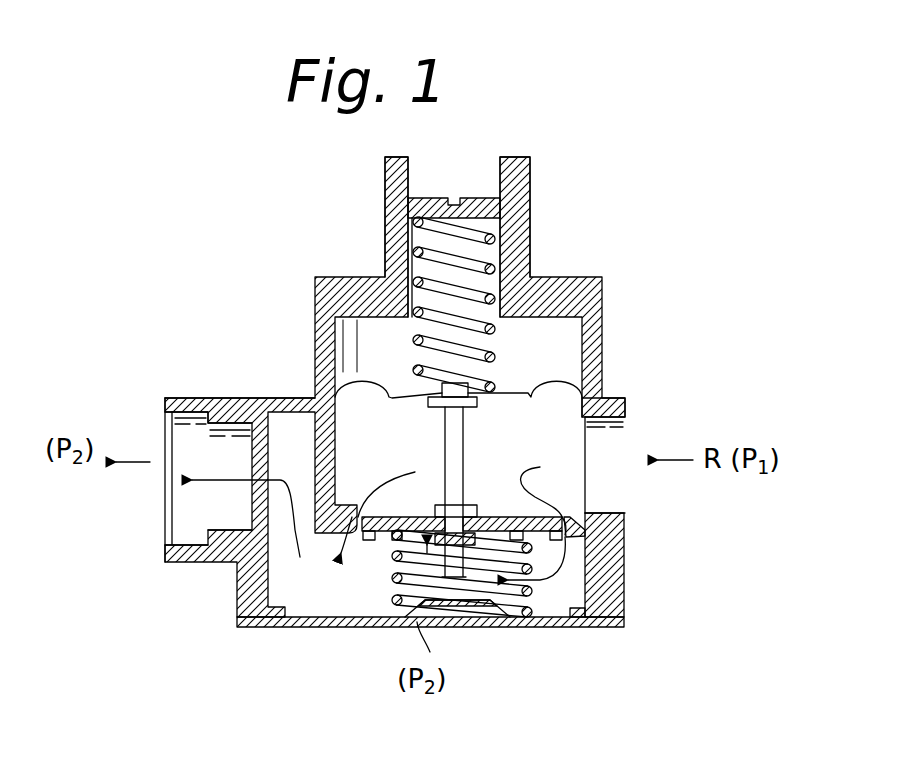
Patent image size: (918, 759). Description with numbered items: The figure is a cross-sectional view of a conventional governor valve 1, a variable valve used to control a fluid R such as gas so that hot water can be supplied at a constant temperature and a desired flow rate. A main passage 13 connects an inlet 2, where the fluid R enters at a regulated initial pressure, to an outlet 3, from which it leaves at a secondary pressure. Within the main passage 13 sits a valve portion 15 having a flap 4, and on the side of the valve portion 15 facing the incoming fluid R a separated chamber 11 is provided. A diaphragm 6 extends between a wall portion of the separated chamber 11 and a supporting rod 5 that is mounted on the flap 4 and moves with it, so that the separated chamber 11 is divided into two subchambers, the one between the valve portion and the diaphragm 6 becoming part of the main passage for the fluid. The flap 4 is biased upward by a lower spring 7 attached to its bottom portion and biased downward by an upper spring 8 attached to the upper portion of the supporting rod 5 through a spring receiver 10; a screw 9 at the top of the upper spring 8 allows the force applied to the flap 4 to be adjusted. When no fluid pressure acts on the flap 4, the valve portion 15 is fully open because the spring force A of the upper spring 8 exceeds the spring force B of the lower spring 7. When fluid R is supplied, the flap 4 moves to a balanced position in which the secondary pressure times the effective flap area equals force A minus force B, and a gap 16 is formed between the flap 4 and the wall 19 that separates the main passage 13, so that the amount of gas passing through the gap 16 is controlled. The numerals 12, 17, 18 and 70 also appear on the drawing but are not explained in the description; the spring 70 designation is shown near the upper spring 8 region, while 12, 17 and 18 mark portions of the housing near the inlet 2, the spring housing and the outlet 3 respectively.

The governor valve 1 is at (701, 584).
The inlet 2 is at (617, 447).
The outlet 3 is at (180, 520).
The flap 4 is at (382, 528).
The supporting rod 5 is at (460, 615).
The diaphragm 6 is at (603, 360).
The lower spring 7 is at (533, 623).
The upper spring 8 is at (533, 240).
The screw 9 is at (487, 210).
The spring receiver 10 is at (407, 387).
The separated chamber 11 is at (550, 343).
The inlet passage 12 is at (555, 478).
The main passage 13 is at (303, 602).
The valve portion 15 is at (508, 491).
The gap 16 is at (624, 580).
The housing wall 17 is at (397, 245).
The outlet wall 18 is at (232, 408).
The wall 19 is at (618, 545).
The pressure setting spring 70 is at (415, 207).
The spring force of the upper spring A is at (540, 303).
The spring force of the lower spring B is at (420, 545).